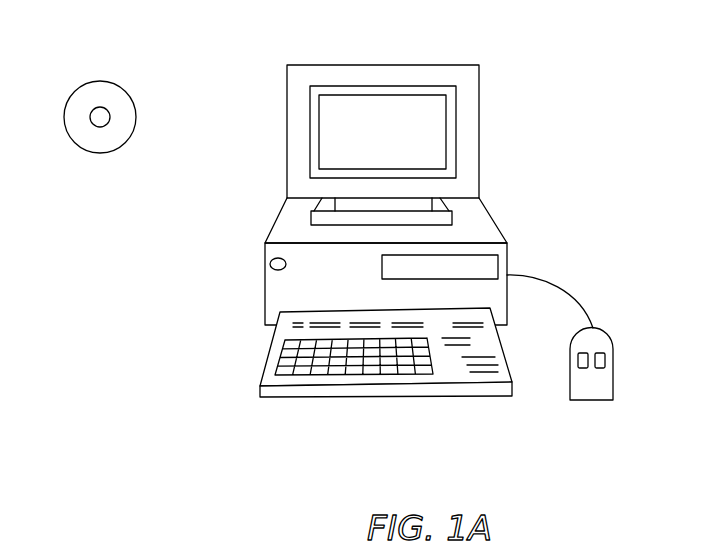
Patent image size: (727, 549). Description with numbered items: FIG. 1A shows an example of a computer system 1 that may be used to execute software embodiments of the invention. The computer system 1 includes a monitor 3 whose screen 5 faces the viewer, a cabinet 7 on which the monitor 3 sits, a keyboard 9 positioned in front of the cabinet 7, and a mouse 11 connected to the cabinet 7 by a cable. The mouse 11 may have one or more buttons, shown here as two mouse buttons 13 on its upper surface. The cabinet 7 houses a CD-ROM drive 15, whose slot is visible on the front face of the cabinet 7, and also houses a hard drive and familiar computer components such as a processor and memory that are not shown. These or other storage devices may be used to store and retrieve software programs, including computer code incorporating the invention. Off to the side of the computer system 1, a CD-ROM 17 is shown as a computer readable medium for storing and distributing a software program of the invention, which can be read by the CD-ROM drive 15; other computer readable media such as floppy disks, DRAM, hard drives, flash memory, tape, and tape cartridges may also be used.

The computer system 1 is at (352, 234).
The monitor 3 is at (389, 145).
The screen 5 is at (323, 121).
The cabinet 7 is at (394, 261).
The keyboard 9 is at (384, 381).
The mouse 11 is at (586, 363).
The mouse buttons 13 is at (600, 368).
The CD-ROM drive 15 is at (480, 251).
The CD-ROM 17 is at (84, 149).